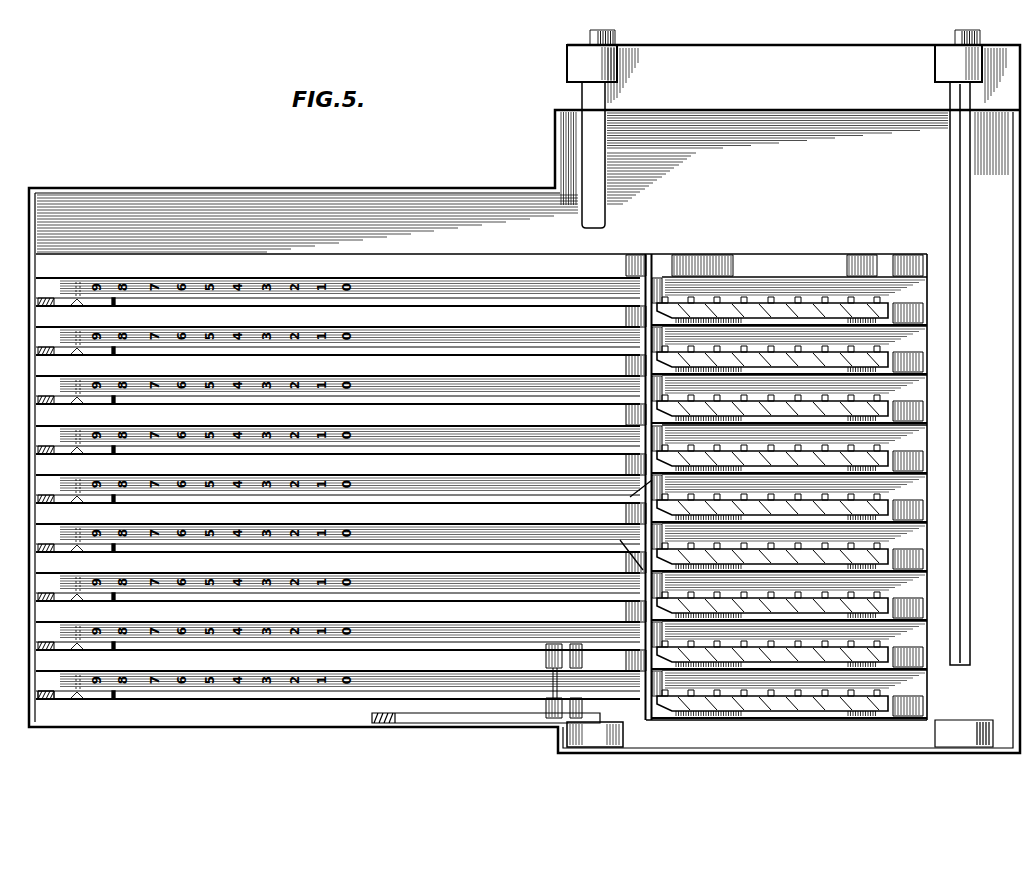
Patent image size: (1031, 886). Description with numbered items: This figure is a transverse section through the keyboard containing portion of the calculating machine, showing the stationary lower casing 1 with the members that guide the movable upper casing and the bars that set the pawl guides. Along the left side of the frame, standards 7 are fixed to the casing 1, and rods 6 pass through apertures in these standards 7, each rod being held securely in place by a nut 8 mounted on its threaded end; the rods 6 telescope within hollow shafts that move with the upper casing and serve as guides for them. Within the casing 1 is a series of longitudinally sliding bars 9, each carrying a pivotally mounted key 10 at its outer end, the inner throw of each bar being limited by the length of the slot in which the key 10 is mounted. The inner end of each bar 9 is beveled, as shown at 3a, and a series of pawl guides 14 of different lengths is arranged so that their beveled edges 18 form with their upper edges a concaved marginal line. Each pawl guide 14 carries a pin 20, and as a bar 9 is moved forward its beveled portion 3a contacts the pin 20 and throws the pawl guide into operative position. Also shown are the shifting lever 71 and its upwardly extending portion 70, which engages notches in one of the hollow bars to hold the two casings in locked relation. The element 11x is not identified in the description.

The casing 1 is at (434, 722).
The beveled inner end of bar 3a is at (628, 606).
The rods 6 is at (958, 157).
The standards 7 is at (630, 62).
The nuts 8 is at (588, 40).
The longitudinally sliding bars 9 is at (20, 581).
The key 10 is at (52, 700).
The stop bar 11x is at (654, 280).
The pawl guides 14 is at (867, 542).
The beveled edges of pawl guides 18 is at (862, 712).
The pin 20 is at (824, 297).
The upwardly extending portion of shifting lever 70 is at (574, 736).
The shifting lever 71 is at (515, 715).